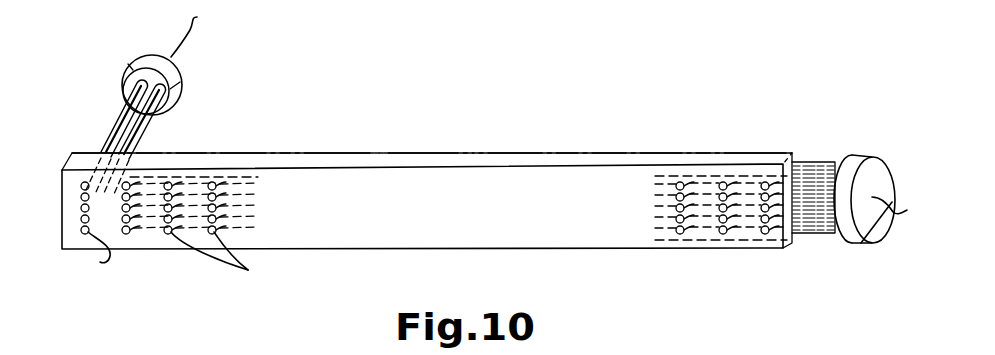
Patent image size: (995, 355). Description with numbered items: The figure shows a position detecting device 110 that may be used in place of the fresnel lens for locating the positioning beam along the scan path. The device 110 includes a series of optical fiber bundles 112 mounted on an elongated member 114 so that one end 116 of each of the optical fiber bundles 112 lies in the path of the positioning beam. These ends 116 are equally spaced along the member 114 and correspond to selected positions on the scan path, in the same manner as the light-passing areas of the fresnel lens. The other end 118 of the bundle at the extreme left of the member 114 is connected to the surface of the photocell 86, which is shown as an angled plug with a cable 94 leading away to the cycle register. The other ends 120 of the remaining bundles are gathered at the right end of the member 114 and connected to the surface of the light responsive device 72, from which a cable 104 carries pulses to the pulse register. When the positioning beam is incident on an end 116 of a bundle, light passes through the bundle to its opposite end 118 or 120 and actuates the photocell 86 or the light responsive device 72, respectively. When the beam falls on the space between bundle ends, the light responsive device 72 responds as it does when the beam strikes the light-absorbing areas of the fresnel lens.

The position detecting device 110 is at (627, 126).
The member 114 is at (207, 165).
The optical fiber bundles 112 is at (145, 234).
The one end of the optical fiber bundles 116 is at (422, 232).
The other end of the extreme left bundle 118 is at (116, 128).
The photocell 86 is at (170, 112).
The cable 94 is at (188, 33).
The other ends of the remaining bundles 120 is at (815, 160).
The light responsive device 72 is at (857, 156).
The cable 104 is at (863, 244).